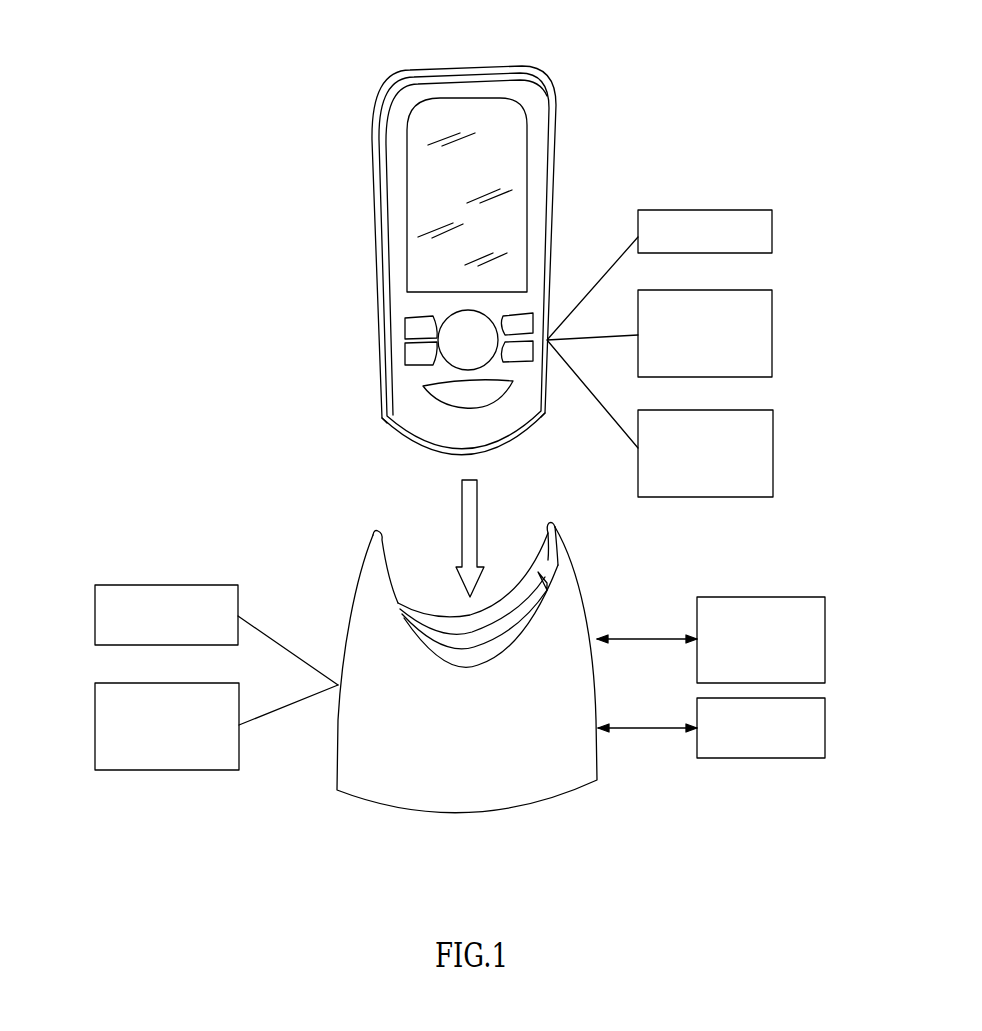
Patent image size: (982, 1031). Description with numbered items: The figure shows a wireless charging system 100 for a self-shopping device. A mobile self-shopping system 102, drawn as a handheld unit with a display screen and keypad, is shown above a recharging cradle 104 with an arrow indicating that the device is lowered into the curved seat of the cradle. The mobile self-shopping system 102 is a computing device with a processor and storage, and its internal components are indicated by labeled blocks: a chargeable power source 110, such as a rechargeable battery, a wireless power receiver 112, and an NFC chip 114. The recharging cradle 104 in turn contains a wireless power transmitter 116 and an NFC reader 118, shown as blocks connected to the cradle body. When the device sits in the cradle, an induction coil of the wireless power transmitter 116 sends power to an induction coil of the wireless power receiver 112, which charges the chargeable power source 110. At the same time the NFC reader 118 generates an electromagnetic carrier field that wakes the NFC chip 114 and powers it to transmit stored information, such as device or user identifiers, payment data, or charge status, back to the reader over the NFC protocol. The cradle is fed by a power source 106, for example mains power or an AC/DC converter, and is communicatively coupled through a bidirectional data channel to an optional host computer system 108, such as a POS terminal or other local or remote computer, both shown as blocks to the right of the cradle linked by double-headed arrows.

The wireless charging system 100 is at (663, 37).
The mobile self-shopping system 102 is at (372, 128).
The recharging cradle 104 is at (353, 592).
The power source 106 is at (762, 758).
The host computer system 108 is at (755, 597).
The chargeable power source 110 is at (773, 458).
The wireless power receiver 112 is at (772, 337).
The NFC chip 114 is at (772, 233).
The wireless power transmitter 116 is at (172, 770).
The NFC reader 118 is at (173, 585).